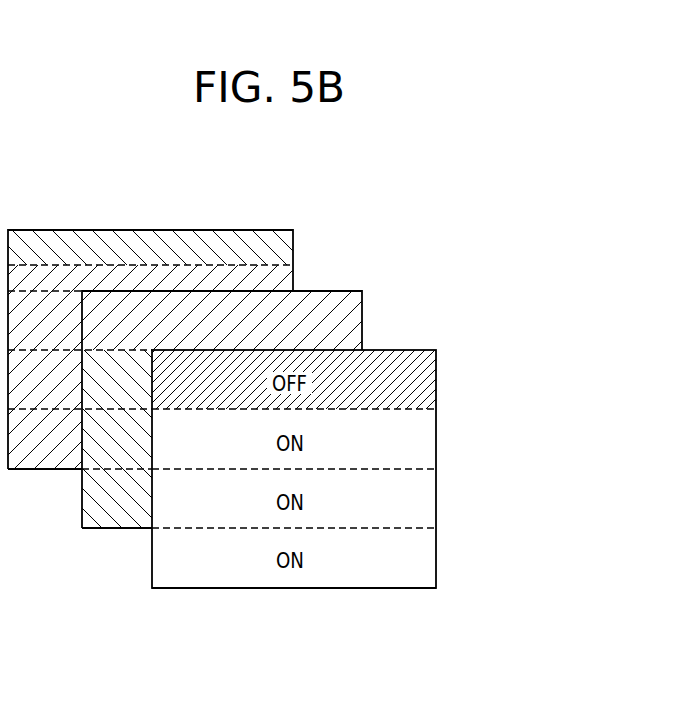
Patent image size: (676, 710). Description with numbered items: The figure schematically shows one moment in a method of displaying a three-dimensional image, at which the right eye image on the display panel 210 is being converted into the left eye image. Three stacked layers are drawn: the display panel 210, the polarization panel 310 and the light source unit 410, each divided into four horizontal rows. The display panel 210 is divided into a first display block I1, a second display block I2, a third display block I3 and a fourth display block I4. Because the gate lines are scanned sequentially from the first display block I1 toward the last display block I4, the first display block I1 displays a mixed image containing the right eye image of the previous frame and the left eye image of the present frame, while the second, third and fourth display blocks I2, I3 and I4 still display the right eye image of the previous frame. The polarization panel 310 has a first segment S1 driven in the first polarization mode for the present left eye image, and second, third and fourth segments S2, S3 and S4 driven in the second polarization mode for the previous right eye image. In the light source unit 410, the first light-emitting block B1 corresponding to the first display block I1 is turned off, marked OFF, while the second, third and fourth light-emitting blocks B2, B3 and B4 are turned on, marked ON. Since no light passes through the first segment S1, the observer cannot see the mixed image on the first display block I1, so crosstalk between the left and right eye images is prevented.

The display panel 210 is at (142, 230).
The polarization panel 310 is at (333, 291).
The light source unit 410 is at (416, 350).
The first light-emitting block B1 is at (436, 378).
The second light-emitting block B2 is at (436, 440).
The third light-emitting block B3 is at (436, 498).
The fourth light-emitting block B4 is at (436, 556).
The first display block I1 is at (34, 265).
The second display block I2 is at (36, 322).
The third display block I3 is at (36, 382).
The fourth display block I4 is at (36, 440).
The first segment S1 is at (106, 325).
The second segment S2 is at (106, 385).
The third segment S3 is at (106, 443).
The fourth segment S4 is at (106, 502).